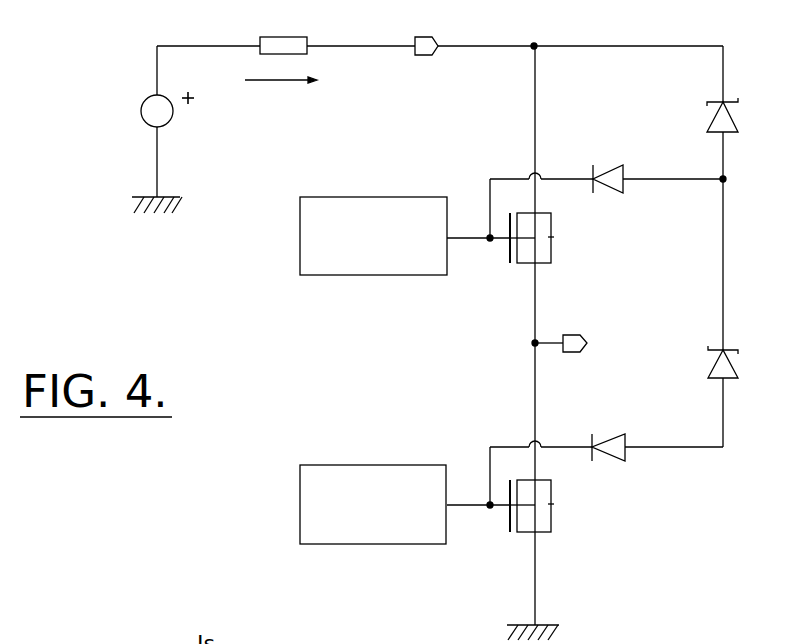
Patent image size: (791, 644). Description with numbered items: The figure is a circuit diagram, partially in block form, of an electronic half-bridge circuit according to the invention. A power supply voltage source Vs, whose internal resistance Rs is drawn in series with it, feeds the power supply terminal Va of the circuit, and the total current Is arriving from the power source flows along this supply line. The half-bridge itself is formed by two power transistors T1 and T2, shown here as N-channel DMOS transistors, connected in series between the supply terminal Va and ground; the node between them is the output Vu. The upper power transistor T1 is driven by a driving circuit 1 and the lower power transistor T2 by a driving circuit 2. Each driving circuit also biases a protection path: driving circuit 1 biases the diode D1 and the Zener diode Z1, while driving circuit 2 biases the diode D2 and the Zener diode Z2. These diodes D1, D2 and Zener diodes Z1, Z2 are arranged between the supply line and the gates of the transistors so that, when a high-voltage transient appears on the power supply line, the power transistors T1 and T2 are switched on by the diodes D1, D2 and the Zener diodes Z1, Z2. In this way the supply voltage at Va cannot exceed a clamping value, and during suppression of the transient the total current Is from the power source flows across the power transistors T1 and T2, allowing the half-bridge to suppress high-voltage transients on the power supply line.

The driving circuit 1 is at (354, 236).
The driving circuit 2 is at (353, 504).
The power supply voltage source Vs is at (147, 121).
The internal resistance Rs is at (283, 27).
The total current Is is at (281, 98).
The power supply terminal Va is at (425, 27).
The output terminal Vu is at (559, 327).
The power transistor T1 is at (549, 230).
The power transistor T2 is at (549, 502).
The diode D1 is at (605, 162).
The diode D2 is at (610, 432).
The Zener diode Z1 is at (702, 107).
The Zener diode Z2 is at (705, 350).